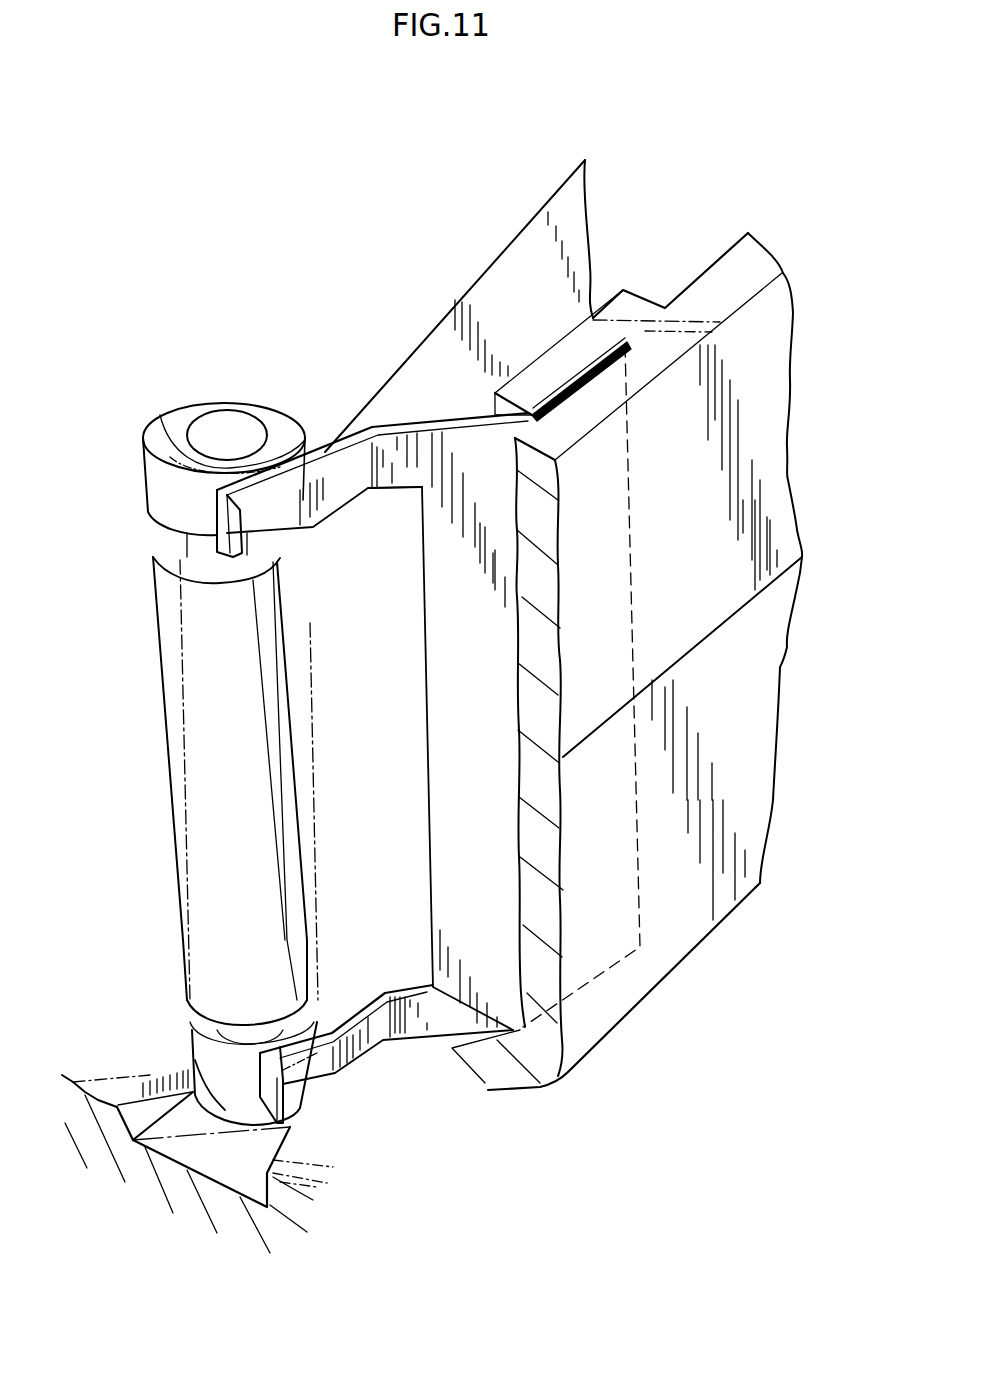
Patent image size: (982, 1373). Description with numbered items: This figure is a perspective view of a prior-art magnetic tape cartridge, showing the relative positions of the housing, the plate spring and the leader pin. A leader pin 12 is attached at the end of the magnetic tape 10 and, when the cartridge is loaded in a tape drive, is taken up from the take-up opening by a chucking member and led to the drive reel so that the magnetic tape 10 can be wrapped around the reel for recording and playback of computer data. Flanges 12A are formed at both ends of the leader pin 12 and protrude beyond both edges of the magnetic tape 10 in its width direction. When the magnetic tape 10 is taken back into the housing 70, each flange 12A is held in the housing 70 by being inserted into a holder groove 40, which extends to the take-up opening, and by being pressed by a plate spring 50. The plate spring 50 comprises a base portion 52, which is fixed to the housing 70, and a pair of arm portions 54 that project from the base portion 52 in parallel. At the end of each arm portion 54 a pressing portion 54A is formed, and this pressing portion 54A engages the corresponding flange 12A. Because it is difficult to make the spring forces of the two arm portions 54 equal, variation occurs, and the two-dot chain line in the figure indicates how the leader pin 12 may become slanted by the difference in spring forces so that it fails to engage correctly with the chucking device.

The magnetic tape 10 is at (487, 323).
The leader pin 12 is at (183, 678).
The flange 12A is at (143, 478).
The holder groove 40 is at (192, 1157).
The plate spring 50 is at (477, 890).
The base portion 52 is at (582, 377).
The arm portion 54 is at (353, 478).
The pressing portion 54A is at (212, 496).
The housing 70 is at (757, 353).